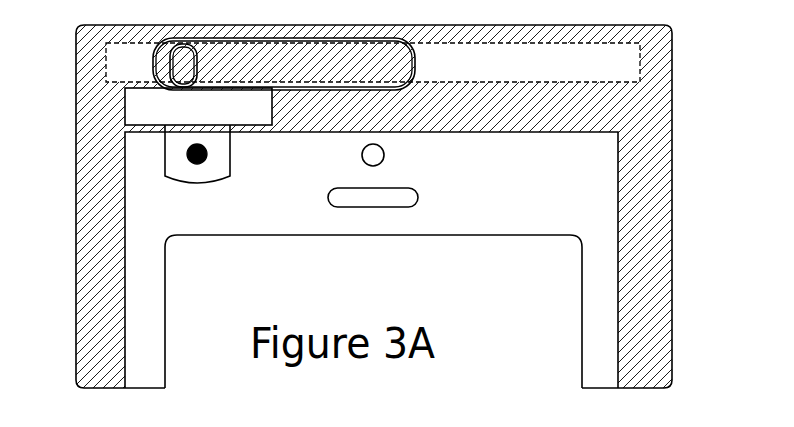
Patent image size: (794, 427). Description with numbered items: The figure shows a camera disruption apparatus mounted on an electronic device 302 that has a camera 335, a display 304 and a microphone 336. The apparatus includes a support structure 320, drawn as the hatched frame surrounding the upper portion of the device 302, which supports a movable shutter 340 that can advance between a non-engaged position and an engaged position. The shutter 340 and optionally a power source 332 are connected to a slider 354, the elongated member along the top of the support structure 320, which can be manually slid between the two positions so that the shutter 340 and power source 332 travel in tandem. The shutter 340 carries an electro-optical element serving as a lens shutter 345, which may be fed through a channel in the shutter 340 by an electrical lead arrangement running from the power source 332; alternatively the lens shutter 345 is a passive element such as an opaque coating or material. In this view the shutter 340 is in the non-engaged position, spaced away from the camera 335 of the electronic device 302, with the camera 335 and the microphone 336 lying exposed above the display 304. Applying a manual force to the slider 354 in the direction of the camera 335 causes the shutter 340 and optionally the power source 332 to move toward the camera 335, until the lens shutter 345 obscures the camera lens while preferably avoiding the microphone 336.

The electronic device 302 is at (622, 208).
The display 304 is at (583, 320).
The support structure 320 is at (632, 106).
The power source 332 is at (217, 121).
The camera 335 is at (385, 151).
The microphone 336 is at (421, 198).
The shutter 340 is at (178, 165).
The lens shutter 345 is at (187, 151).
The slider 354 is at (172, 62).